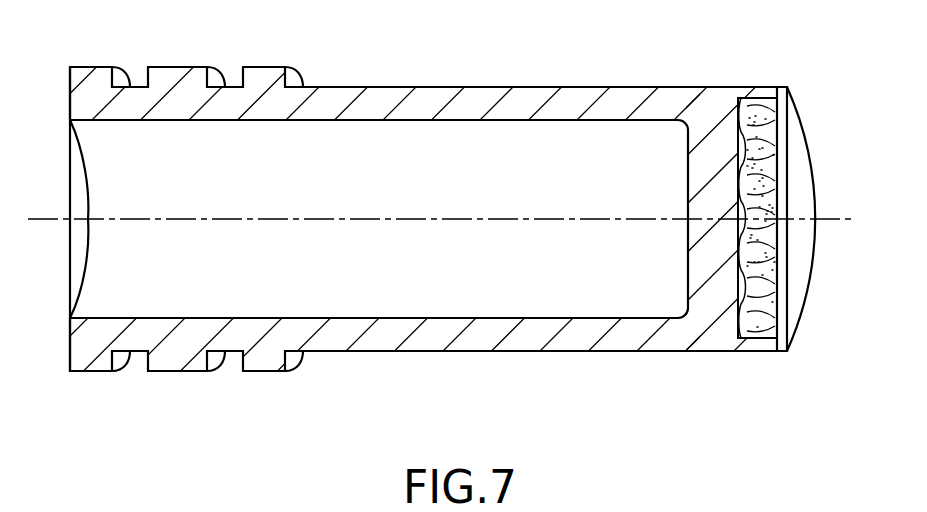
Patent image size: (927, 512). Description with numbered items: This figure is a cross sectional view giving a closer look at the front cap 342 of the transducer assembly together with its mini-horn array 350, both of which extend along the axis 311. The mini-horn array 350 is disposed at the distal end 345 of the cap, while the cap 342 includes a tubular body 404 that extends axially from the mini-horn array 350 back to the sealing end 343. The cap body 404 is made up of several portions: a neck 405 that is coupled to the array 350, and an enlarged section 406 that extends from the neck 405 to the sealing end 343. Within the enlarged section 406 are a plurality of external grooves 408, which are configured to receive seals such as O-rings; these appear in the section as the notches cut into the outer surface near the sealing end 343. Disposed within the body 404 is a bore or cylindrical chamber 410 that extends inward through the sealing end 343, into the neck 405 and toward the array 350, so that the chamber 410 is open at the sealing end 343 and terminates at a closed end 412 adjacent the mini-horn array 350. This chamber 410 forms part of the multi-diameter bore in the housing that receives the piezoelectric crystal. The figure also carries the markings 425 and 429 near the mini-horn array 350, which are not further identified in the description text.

The axis 311 is at (245, 219).
The front cap 342 is at (433, 105).
The sealing end 343 is at (77, 372).
The distal end 345 is at (792, 337).
The mini-horn array 350 is at (763, 98).
The tubular body 404 is at (545, 100).
The neck 405 is at (462, 340).
The enlarged section 406 is at (183, 372).
The external grooves 408 is at (122, 357).
The cylindrical chamber 410 is at (110, 273).
The closed end 412 is at (690, 297).
The inner lobes 425 is at (756, 192).
The wavy inner boundary 429 is at (730, 208).